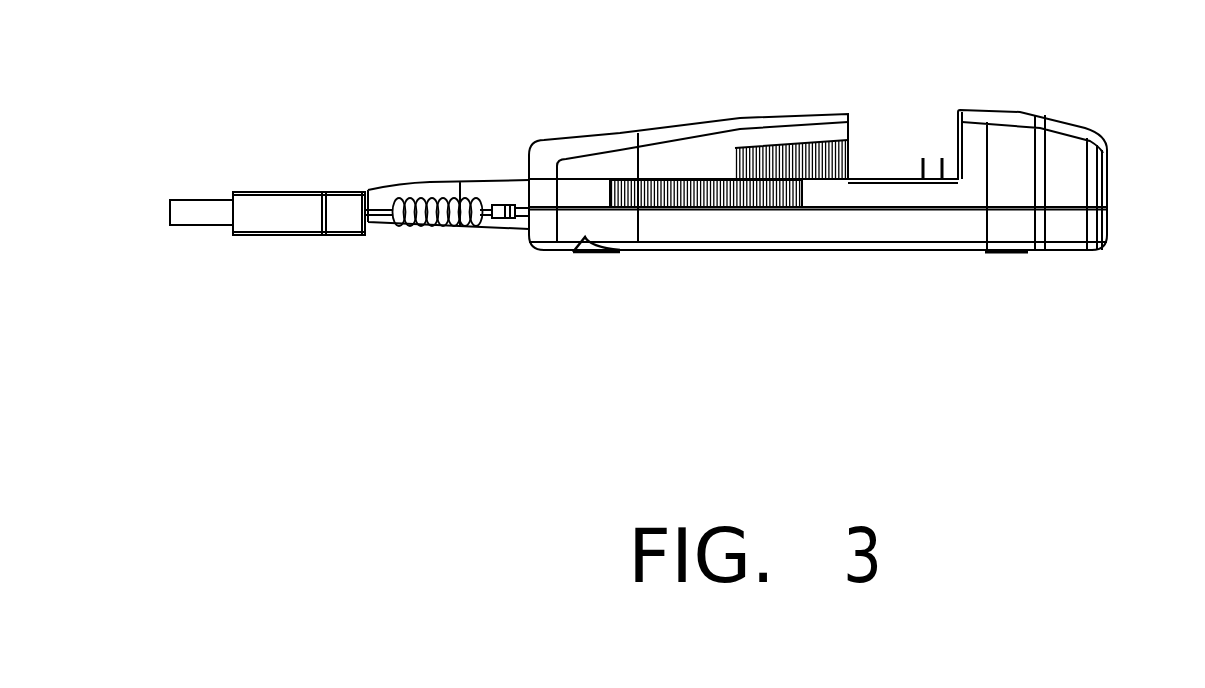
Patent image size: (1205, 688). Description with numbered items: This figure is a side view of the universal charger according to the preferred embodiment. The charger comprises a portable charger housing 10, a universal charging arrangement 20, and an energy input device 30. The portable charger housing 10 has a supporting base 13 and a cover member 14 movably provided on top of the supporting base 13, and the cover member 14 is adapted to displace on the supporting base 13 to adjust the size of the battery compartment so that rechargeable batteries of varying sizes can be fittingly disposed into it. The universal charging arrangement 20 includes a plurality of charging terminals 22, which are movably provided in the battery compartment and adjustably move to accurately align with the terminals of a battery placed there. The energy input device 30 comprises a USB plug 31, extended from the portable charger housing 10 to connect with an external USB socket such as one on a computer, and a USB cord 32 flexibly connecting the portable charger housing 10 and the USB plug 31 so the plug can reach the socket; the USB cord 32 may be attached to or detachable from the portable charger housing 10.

The portable charger housing 10 is at (1083, 118).
The supporting base 13 is at (811, 232).
The cover member 14 is at (685, 160).
The universal charging arrangement 20 is at (929, 124).
The charging terminals 22 is at (922, 158).
The energy input device 30 is at (367, 217).
The USB plug 31 is at (277, 212).
The USB cord 32 is at (440, 218).